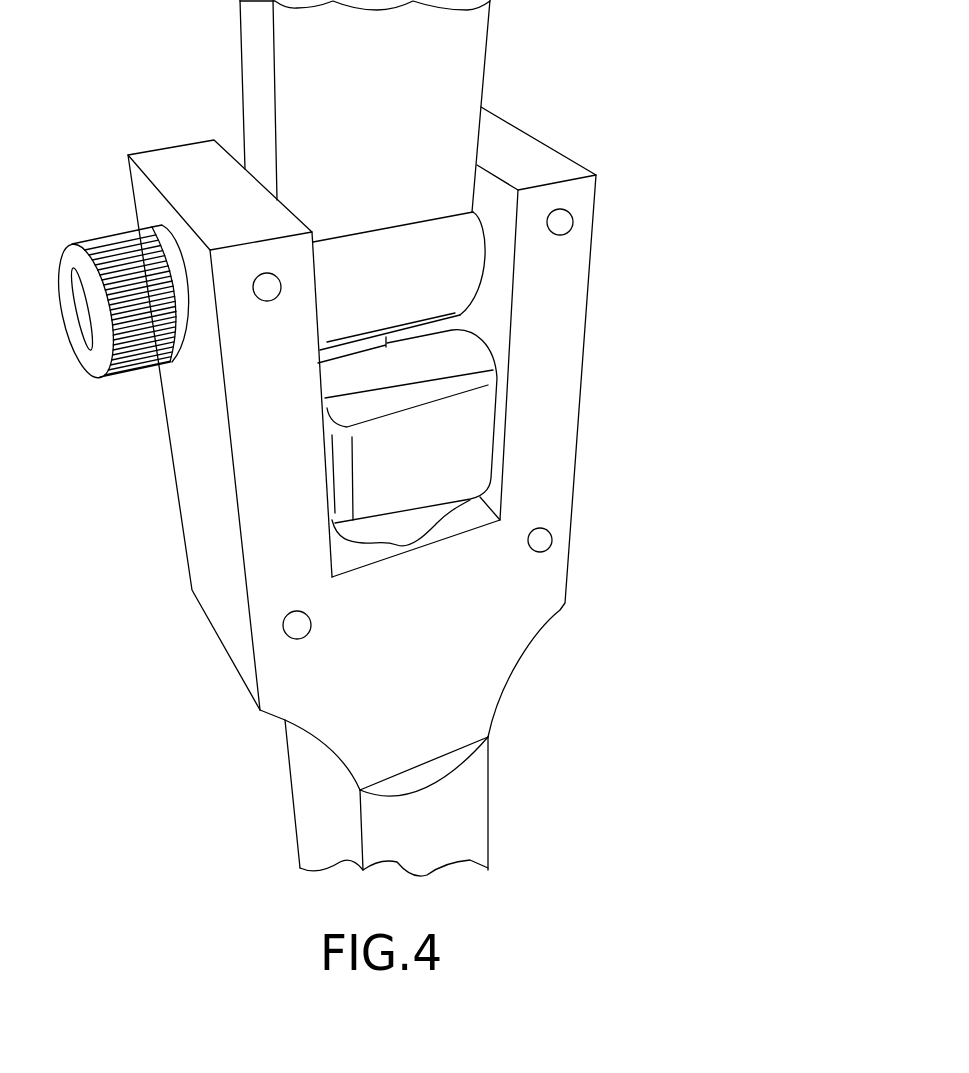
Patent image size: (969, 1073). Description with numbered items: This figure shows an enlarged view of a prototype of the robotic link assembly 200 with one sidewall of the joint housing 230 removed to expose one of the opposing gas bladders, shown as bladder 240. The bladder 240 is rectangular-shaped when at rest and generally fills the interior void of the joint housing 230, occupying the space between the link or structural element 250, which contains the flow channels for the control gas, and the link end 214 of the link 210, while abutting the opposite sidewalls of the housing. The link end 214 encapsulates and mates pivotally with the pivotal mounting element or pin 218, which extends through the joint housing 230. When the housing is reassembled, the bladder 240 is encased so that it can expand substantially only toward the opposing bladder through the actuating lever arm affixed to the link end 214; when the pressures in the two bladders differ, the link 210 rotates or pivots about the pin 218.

The robotic link assembly 200 is at (683, 263).
The link 210 is at (488, 35).
The link end 214 is at (465, 232).
The pivotal mounting element or pin 218 is at (93, 363).
The joint housing 230 is at (148, 535).
The bladder 240 is at (461, 450).
The link or structural element 250 is at (508, 732).